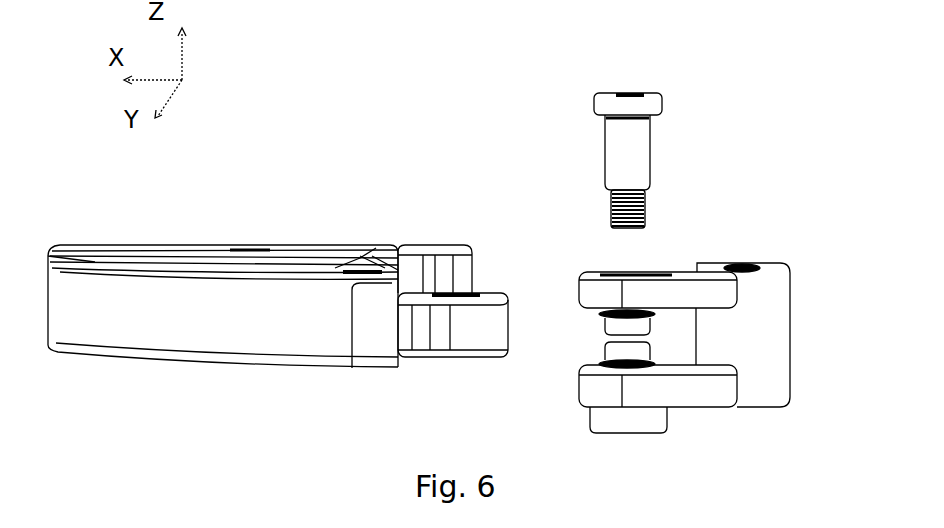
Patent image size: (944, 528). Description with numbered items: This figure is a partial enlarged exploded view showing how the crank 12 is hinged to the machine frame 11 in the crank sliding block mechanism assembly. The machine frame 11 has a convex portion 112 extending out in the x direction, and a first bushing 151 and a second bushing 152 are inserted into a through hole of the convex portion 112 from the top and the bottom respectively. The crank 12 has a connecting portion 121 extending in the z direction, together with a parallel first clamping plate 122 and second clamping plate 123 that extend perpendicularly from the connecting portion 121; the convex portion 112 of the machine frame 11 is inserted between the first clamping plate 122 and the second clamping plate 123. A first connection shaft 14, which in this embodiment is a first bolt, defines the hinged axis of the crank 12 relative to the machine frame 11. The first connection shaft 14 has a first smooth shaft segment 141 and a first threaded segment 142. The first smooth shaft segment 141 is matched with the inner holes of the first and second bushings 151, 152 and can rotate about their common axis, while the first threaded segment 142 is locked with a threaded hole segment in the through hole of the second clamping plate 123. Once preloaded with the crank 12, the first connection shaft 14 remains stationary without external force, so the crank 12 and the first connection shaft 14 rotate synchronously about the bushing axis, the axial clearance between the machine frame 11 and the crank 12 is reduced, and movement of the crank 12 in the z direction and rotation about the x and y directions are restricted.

The machine frame 11 is at (378, 244).
The convex portion 112 is at (473, 340).
The crank 12 is at (690, 341).
The connecting portion 121 is at (772, 314).
The first clamping plate 122 is at (680, 298).
The second clamping plate 123 is at (687, 390).
The first connection shaft 14 is at (624, 160).
The first smooth shaft segment 141 is at (638, 163).
The first threaded segment 142 is at (646, 212).
The first bushing 151 is at (604, 323).
The second bushing 152 is at (607, 352).